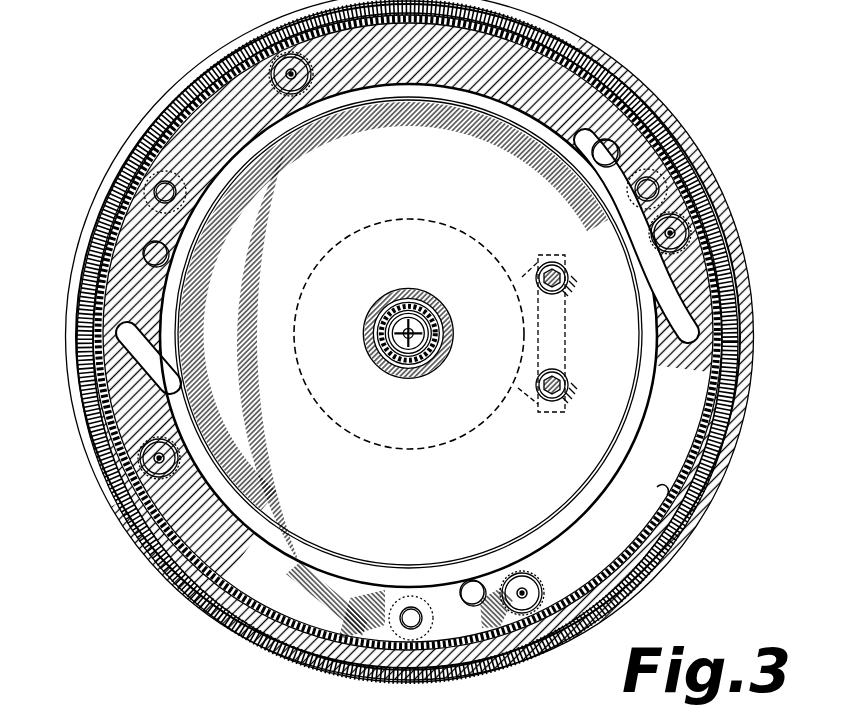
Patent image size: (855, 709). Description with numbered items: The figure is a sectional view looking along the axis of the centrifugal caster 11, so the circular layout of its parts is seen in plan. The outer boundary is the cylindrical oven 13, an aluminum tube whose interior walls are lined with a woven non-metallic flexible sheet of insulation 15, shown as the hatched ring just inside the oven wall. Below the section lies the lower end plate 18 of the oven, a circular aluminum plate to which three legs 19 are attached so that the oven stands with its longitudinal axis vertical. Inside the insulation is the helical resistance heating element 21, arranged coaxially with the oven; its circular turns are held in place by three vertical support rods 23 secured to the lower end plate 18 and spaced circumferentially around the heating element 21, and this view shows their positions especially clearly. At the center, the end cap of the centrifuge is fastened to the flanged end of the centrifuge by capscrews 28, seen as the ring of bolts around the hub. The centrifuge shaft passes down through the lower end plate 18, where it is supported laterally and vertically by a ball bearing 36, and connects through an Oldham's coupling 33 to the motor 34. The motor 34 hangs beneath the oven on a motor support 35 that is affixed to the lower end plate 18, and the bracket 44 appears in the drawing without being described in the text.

The centrifugal caster 11 is at (172, 52).
The cylindrical oven 13 is at (640, 80).
The flexible sheet of insulation 15 is at (428, 502).
The lower end plate 18 is at (153, 566).
The legs 19 is at (163, 185).
The helical resistance heating element 21 is at (520, 108).
The vertical support rods 23 is at (148, 250).
The capscrews 28 is at (484, 708).
The Oldham's coupling 33 is at (414, 300).
The motor 34 is at (503, 248).
The motor support 35 is at (567, 330).
The ball bearing 36 is at (451, 337).
The anchor pins 44 is at (302, 82).